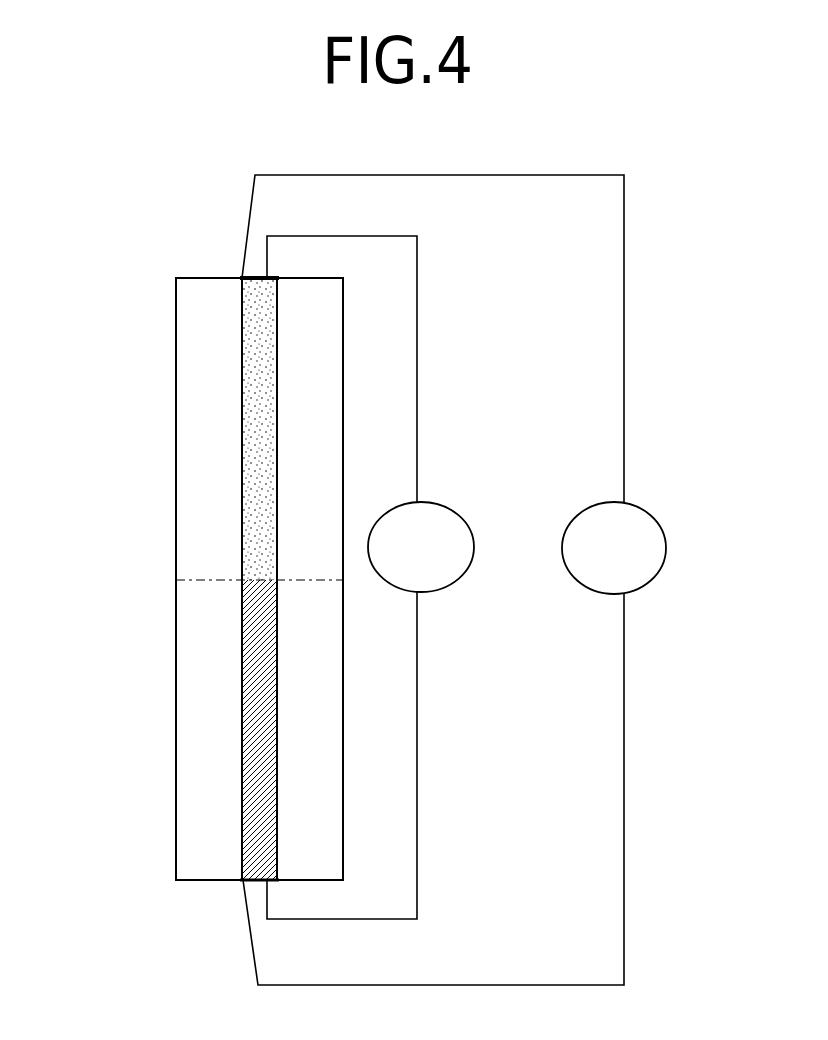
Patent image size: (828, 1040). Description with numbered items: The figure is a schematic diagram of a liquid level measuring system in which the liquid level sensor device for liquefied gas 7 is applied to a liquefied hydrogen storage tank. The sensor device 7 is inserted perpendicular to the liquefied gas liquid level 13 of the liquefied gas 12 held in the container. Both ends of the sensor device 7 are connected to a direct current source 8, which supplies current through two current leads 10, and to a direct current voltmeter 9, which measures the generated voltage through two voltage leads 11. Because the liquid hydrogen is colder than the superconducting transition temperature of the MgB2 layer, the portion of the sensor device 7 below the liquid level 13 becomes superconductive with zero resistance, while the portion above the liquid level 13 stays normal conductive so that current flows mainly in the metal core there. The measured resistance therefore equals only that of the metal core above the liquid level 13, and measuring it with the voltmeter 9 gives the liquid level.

The liquid level sensor device for liquefied gas 7 is at (232, 418).
The direct current source 8 is at (668, 523).
The direct current voltmeter 9 is at (466, 527).
The current lead 10 is at (577, 185).
The voltage lead 11 is at (370, 252).
The liquefied gas 12 is at (190, 768).
The liquefied gas liquid level 13 is at (166, 579).